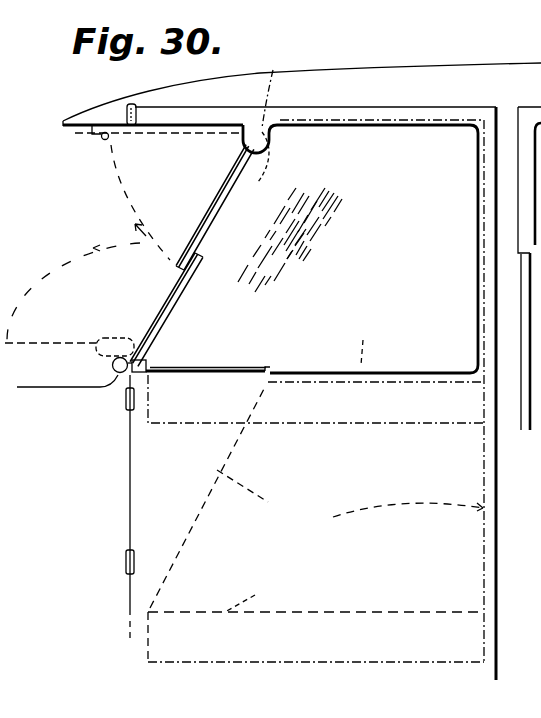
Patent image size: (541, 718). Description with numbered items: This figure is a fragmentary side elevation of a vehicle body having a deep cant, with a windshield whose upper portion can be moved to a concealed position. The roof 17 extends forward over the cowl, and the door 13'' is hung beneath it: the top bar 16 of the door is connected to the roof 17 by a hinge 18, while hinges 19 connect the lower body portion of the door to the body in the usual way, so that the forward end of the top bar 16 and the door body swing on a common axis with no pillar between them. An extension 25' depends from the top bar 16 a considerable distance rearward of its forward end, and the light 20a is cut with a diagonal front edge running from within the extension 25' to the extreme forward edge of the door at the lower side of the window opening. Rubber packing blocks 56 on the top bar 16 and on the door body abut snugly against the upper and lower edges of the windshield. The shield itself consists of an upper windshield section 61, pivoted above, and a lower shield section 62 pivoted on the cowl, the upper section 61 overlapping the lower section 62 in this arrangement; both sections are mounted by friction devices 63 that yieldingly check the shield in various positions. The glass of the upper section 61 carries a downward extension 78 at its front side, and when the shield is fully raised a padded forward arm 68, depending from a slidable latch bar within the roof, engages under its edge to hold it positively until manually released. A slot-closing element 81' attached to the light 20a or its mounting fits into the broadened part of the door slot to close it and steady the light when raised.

The roof 17 is at (378, 86).
The hinge 18 is at (128, 112).
The forward arm 68 is at (91, 136).
The rubber packing blocks 56 is at (140, 388).
The downward extension 78 is at (228, 167).
The extension 25' is at (289, 144).
The top bar 16 is at (398, 114).
The upper windshield section 61 is at (202, 210).
The lower shield section 62 is at (172, 291).
The friction devices 63 is at (105, 364).
The light 20a is at (320, 331).
The slot-closing element 81' is at (215, 475).
The hinges 19 is at (114, 561).
The door 13'' is at (316, 592).